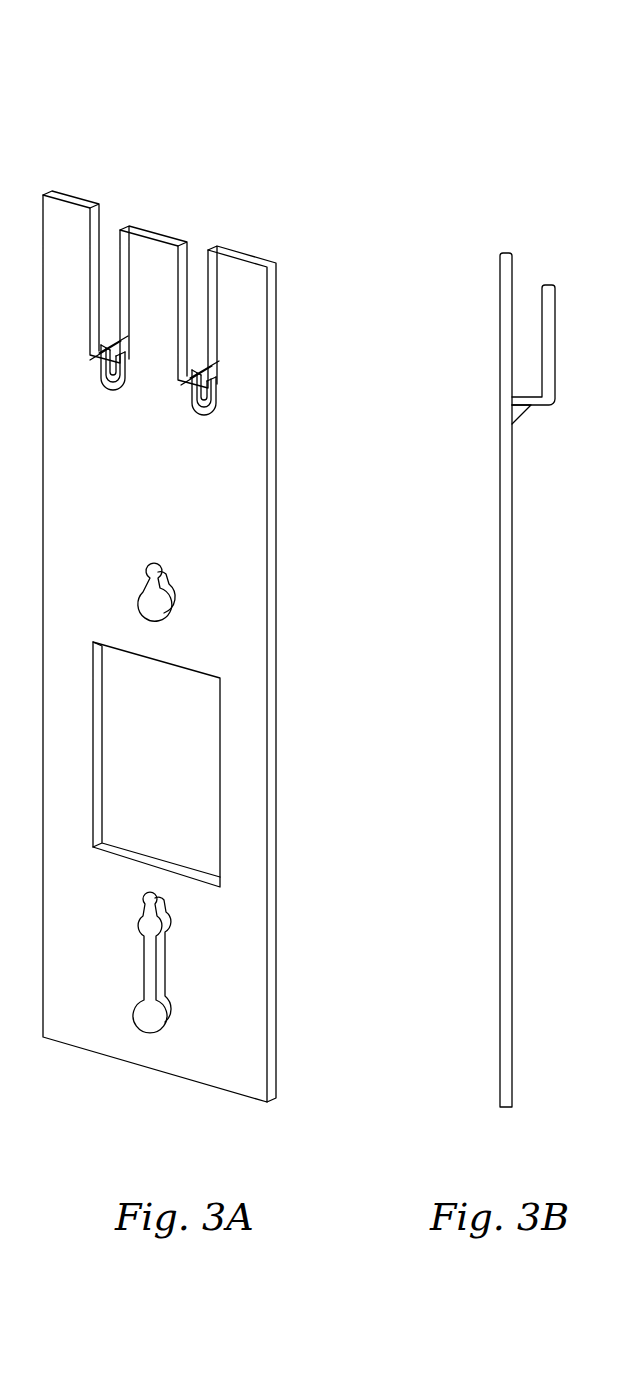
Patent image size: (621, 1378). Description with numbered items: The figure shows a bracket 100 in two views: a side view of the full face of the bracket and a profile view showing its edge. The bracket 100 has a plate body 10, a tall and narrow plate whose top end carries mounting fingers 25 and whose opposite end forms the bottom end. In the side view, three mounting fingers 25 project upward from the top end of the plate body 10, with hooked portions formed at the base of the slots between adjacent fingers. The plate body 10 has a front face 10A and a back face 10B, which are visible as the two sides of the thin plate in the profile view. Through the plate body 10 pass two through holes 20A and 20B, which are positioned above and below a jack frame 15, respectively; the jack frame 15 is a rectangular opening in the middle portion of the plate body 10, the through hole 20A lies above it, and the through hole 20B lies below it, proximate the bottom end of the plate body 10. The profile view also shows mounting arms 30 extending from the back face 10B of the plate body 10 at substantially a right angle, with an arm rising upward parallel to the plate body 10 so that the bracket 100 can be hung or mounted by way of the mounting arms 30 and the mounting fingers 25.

In FIG. 3A, the plate body 10 is at (244, 468).
In FIG. 3B, the front face 10A is at (500, 647).
In FIG. 3B, the back face 10B is at (513, 519).
In FIG. 3A, the jack frame 15 is at (197, 753).
In FIG. 3A, the through hole 20A is at (173, 592).
In FIG. 3A, the through hole 20B is at (170, 985).
In FIG. 3A, the mounting fingers 25 is at (250, 244).
In FIG. 3B, the mounting arms 30 is at (556, 326).
In FIG. 3A, the bracket 100 is at (330, 287).